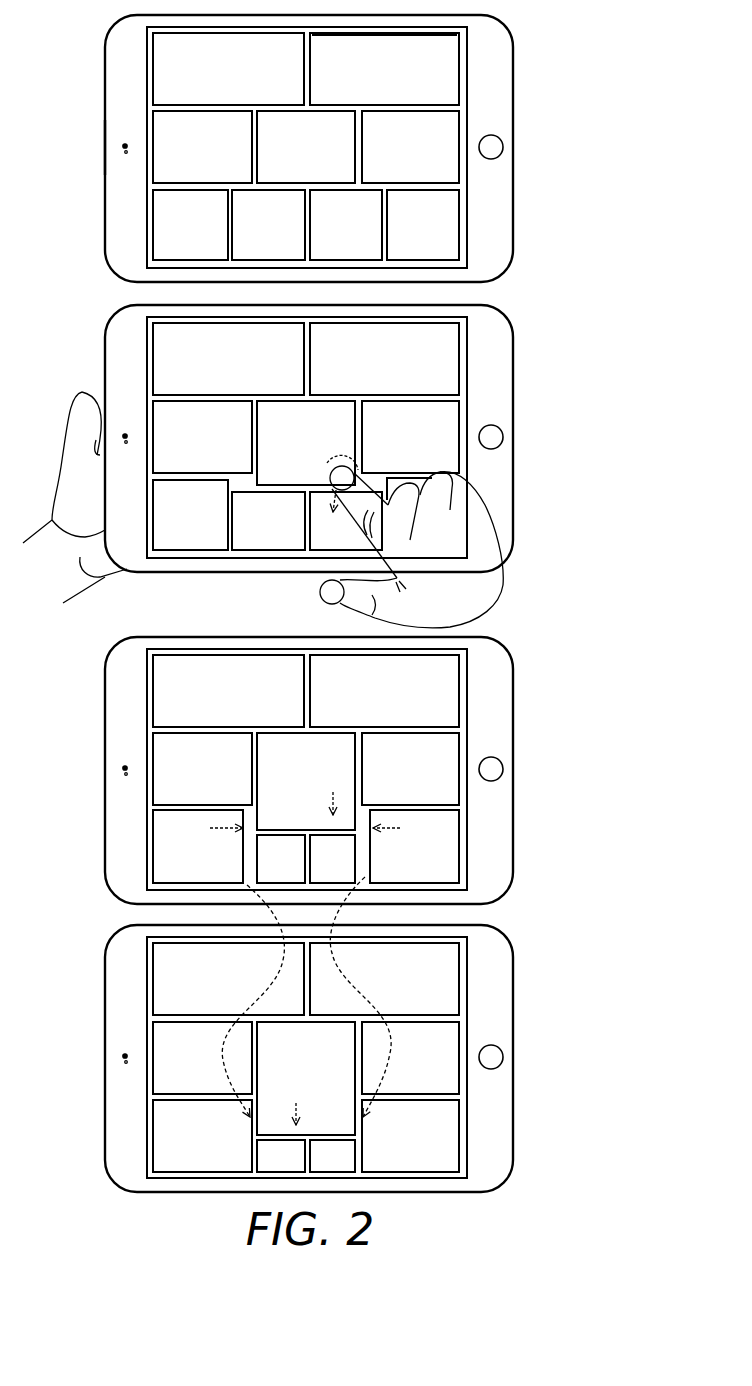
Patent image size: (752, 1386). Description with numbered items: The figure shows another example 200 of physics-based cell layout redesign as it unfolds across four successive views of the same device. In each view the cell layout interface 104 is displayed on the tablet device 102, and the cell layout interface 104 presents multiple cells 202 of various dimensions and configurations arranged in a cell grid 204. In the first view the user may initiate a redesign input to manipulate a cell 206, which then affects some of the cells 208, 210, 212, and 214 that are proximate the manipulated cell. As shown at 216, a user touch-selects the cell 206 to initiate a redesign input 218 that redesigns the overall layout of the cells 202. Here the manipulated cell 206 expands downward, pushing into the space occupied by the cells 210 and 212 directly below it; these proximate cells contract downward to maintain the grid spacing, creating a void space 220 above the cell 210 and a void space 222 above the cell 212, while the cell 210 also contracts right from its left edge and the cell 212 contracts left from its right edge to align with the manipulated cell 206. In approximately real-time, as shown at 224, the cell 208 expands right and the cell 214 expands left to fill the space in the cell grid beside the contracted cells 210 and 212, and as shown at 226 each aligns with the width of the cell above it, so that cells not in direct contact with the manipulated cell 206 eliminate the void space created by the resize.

The tablet device 102 is at (105, 147).
The cell layout interface 104 is at (147, 167).
The example of physics-based cell layout redesign 200 is at (534, 80).
The cells 202 is at (417, 127).
The cell grid 204 is at (151, 94).
The manipulated cell 206 is at (290, 155).
The cell 208 is at (174, 232).
The proximate cell 210 is at (251, 232).
The proximate cell 212 is at (330, 232).
The cell 214 is at (407, 232).
The touch-selection of the cell 216 is at (534, 370).
The redesign input 218 is at (326, 505).
The void space 220 is at (245, 482).
The void space 222 is at (377, 480).
The cells expanding stage 224 is at (534, 702).
The width-aligned stage 226 is at (534, 1009).